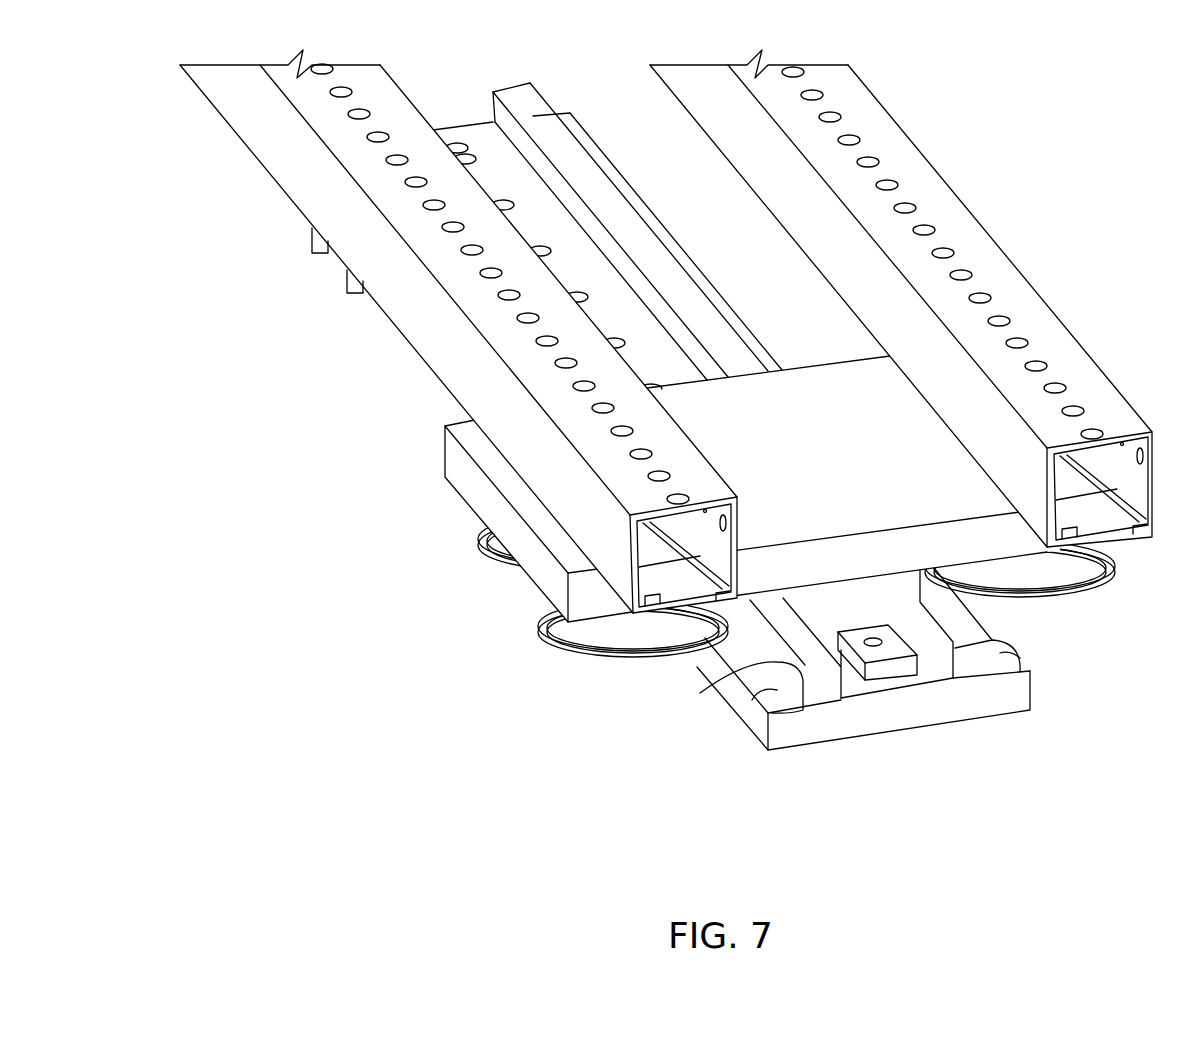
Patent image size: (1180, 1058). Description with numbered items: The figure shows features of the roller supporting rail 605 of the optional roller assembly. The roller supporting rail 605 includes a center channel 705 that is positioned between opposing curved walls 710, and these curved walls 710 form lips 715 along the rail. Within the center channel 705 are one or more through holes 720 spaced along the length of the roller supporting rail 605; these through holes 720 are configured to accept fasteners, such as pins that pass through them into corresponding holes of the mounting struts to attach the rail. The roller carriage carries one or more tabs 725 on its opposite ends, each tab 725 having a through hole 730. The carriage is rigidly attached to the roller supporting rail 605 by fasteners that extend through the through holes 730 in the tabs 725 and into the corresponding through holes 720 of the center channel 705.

The roller supporting rail 605 is at (880, 723).
The center channel 705 is at (853, 683).
The curved walls 710 is at (777, 693).
The lips 715 is at (803, 667).
The through holes 720 is at (547, 248).
The tabs 725 is at (947, 657).
The through holes 730 is at (865, 638).